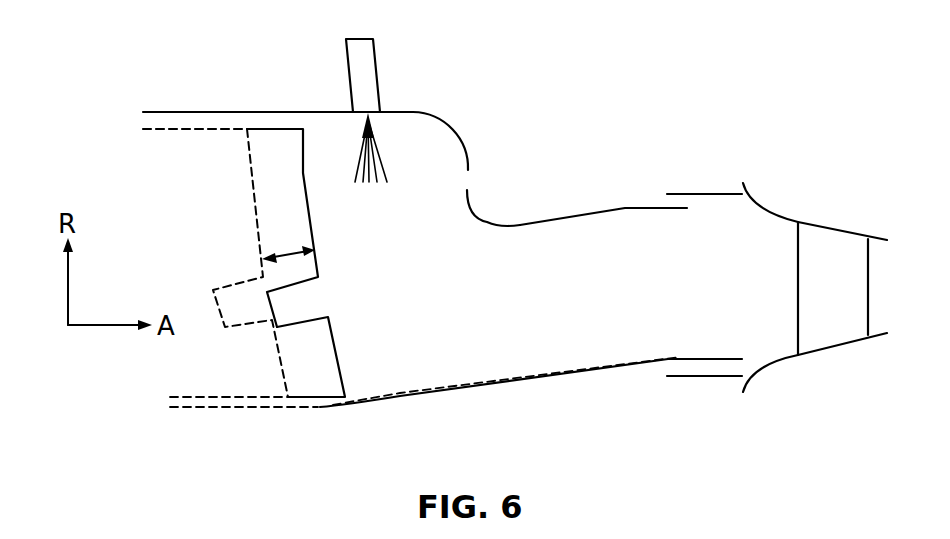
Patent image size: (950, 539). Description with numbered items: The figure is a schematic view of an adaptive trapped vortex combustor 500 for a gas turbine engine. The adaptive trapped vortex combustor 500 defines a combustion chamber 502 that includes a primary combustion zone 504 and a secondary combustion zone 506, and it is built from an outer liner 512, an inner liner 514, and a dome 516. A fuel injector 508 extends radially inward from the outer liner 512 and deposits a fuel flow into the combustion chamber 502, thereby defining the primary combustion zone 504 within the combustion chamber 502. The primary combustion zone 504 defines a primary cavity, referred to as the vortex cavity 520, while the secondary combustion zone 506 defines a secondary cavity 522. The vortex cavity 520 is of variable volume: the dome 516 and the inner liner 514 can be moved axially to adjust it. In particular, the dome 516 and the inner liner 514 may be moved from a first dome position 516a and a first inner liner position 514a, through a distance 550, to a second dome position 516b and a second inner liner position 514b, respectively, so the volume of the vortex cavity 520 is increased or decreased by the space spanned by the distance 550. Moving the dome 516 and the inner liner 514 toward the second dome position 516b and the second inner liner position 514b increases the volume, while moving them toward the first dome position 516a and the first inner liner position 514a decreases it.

The adaptive trapped vortex combustor 500 is at (103, 42).
The combustion chamber 502 is at (520, 209).
The primary combustion zone 504 is at (418, 126).
The secondary combustion zone 506 is at (392, 388).
The fuel injector 508 is at (377, 62).
The outer liner 512 is at (490, 214).
The inner liner 514 is at (540, 380).
The first inner liner position 514a is at (628, 368).
The second inner liner position 514b is at (290, 410).
The dome 516 is at (303, 185).
The first dome position 516a is at (345, 378).
The second dome position 516b is at (285, 372).
The vortex cavity 520 is at (364, 236).
The secondary cavity 522 is at (412, 329).
The distance 550 is at (283, 252).